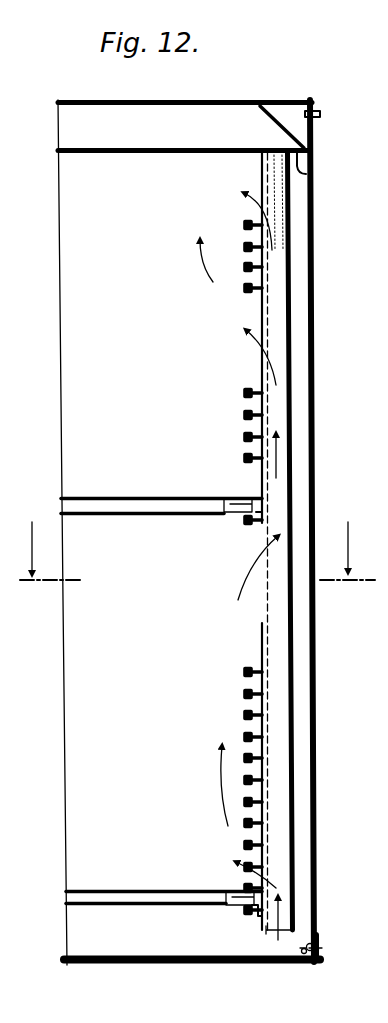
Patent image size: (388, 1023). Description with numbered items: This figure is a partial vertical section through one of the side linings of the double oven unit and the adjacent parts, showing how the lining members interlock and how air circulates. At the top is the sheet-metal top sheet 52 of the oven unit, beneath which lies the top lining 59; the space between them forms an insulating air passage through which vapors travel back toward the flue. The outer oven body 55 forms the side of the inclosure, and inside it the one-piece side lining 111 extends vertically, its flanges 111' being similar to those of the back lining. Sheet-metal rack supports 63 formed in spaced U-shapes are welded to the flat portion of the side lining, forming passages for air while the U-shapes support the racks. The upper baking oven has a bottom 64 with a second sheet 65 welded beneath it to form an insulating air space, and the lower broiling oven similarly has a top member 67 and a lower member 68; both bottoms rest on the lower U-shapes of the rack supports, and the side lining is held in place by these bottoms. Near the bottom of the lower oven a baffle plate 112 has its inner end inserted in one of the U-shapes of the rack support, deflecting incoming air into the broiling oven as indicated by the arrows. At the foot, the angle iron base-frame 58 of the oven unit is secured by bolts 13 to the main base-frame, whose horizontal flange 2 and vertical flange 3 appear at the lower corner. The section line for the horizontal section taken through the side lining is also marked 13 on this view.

The horizontal inwardly directed flange 2 is at (298, 964).
The vertical flange 3 is at (320, 942).
The bolts 13 is at (356, 946).
The top sheet 52 is at (184, 100).
The oven body 55 is at (314, 412).
The angle iron base-frame 58 is at (318, 936).
The top lining 59 is at (242, 154).
The rack supports 63 is at (246, 232).
The upper oven bottom 64 is at (194, 478).
The second sheet of bottom 65 is at (202, 518).
The top member of lower oven bottom 67 is at (166, 890).
The lower member of lower oven bottom 68 is at (210, 906).
The side lining 111 is at (315, 543).
The side lining flanges 111' is at (336, 172).
The baffle plates 112 is at (264, 845).